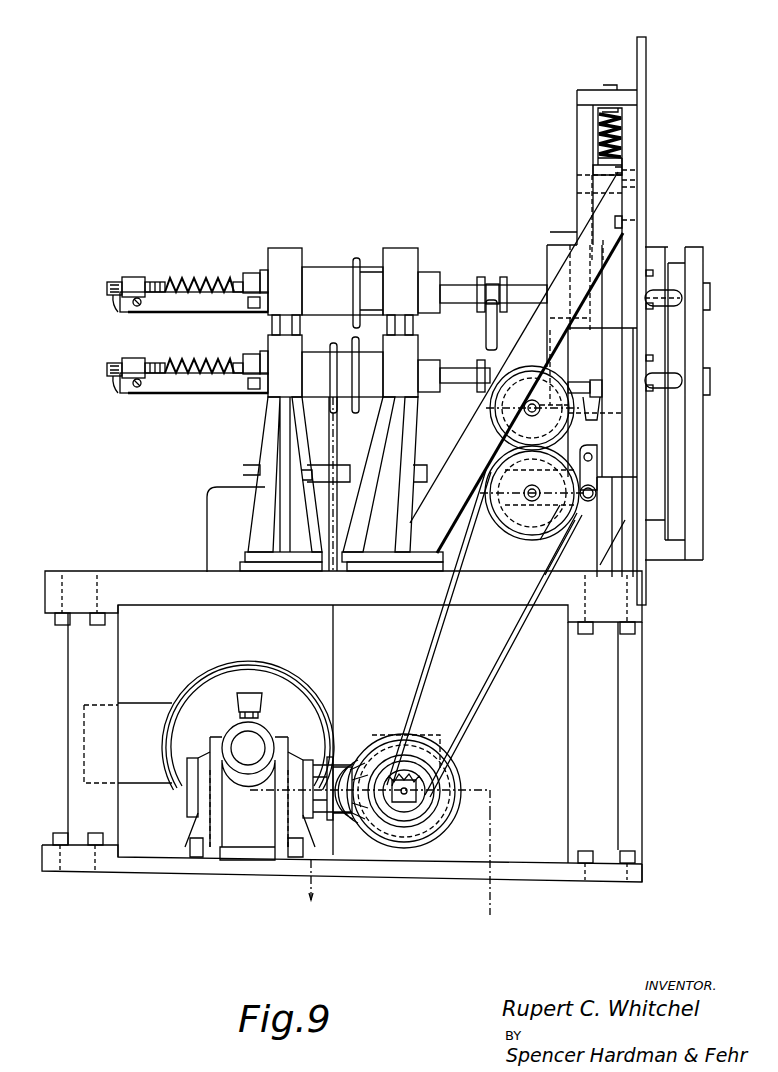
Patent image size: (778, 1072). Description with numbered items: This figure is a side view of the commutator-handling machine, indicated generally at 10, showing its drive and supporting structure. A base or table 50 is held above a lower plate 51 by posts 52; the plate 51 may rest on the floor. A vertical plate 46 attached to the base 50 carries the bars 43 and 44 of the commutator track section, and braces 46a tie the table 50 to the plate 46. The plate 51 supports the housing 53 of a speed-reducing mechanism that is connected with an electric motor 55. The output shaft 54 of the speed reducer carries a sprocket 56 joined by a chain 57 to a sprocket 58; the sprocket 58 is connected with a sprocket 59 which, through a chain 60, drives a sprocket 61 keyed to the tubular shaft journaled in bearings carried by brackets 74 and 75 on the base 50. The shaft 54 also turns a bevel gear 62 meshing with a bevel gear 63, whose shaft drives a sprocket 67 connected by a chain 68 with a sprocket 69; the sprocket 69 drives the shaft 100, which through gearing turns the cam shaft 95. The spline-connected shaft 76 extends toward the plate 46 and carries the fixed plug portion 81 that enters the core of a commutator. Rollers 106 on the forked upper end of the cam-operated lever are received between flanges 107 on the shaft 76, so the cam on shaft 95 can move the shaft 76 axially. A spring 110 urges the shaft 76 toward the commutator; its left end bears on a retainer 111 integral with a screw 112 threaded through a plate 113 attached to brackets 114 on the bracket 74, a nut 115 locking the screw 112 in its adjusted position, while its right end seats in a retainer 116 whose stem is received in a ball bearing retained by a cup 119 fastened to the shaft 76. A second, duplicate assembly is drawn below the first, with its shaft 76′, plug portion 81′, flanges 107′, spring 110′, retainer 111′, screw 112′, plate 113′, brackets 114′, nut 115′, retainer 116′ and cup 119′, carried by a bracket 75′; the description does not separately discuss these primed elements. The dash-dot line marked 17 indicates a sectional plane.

The machine 10 is at (455, 92).
The section line 17 is at (403, 870).
The bar 43 is at (694, 560).
The bar 44 is at (653, 560).
The vertical plate 46 is at (648, 235).
The braces 46a is at (470, 436).
The base 50 is at (236, 606).
The plate 51 is at (184, 882).
The posts 52 is at (68, 663).
The housing of speed reducing mechanism 53 is at (200, 828).
The output shaft 54 is at (345, 813).
The electric motor 55 is at (286, 668).
The sprocket 56 is at (328, 820).
The chain 57 is at (335, 662).
The sprocket 58 is at (331, 343).
The sprocket 59 is at (340, 415).
The chain 60 is at (385, 374).
The sprocket 61 is at (358, 258).
The bevel gear 62 is at (356, 762).
The bevel gear 63 is at (458, 780).
The sprocket 67 is at (414, 772).
The chain 68 is at (428, 655).
The sprocket 69 is at (525, 538).
The bracket 74 is at (250, 462).
The bracket 75 is at (345, 440).
The standard leg 75′ is at (250, 533).
The shaft 76 is at (460, 285).
The shaft 76′ is at (456, 368).
The fixed plug portion 81 is at (660, 306).
The pin 81′ is at (663, 373).
The cam shaft 95 is at (496, 422).
The shaft 100 is at (532, 493).
The rollers 106 is at (486, 300).
The flanges 107 is at (503, 277).
The collar 107′ is at (484, 372).
The spring 110 is at (200, 278).
The spring 110′ is at (206, 354).
The retainer 111 is at (160, 282).
The ratchet 111′ is at (160, 363).
The screw 112 is at (114, 282).
The bolt head 112′ is at (114, 363).
The plate 113 is at (133, 277).
The nut 113′ is at (145, 352).
The brackets 114 is at (208, 312).
The bar 114′ is at (216, 393).
The nut 115 is at (118, 300).
The screw 115′ is at (120, 393).
The retainer 116 is at (240, 282).
The block 116′ is at (238, 363).
The cup 119 is at (255, 273).
The block 119′ is at (260, 348).